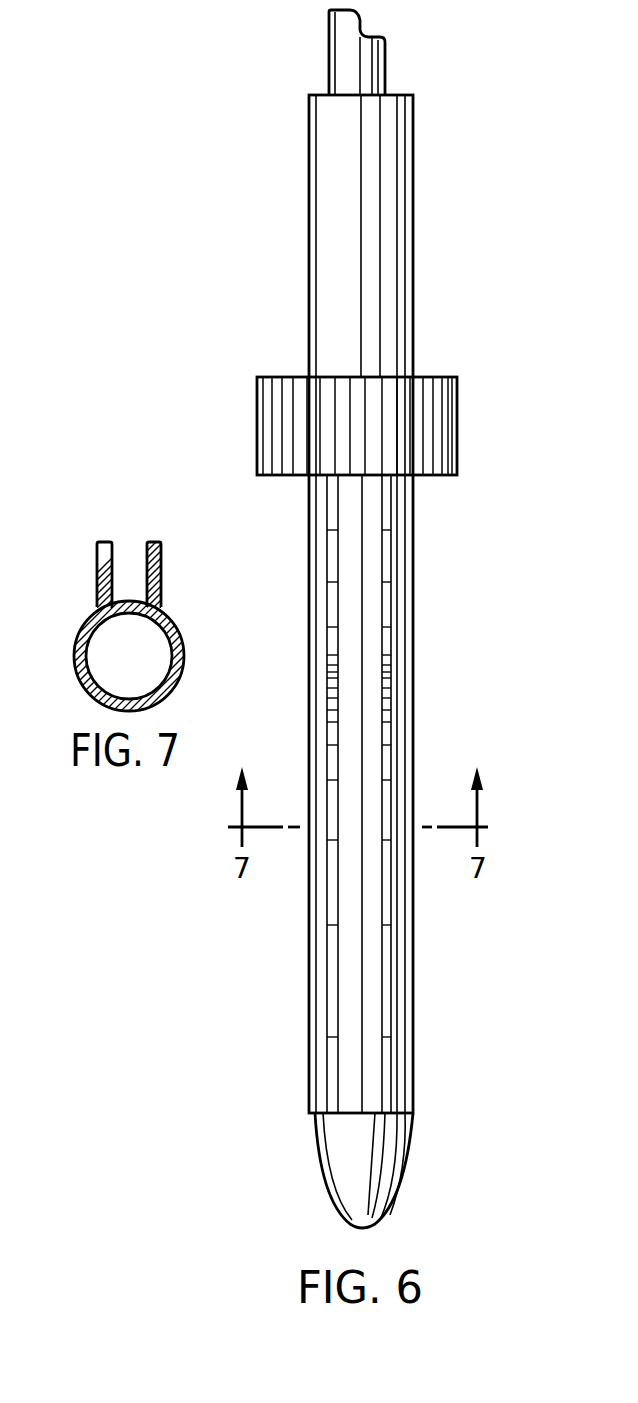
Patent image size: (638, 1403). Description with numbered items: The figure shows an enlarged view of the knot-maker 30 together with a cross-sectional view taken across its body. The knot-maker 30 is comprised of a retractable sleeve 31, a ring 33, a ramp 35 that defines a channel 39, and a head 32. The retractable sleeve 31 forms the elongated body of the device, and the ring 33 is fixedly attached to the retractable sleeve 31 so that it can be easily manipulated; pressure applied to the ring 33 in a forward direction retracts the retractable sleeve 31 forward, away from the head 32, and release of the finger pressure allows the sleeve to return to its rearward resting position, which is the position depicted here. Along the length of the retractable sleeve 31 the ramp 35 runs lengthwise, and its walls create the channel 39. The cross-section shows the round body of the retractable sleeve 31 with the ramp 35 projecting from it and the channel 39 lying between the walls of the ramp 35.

In FIG. 6, the knot-maker 30 is at (410, 619).
In FIG. 6, the retractable sleeve 31 is at (415, 273).
In FIG. 7, the retractable sleeve 31 is at (183, 657).
In FIG. 6, the head 32 is at (385, 1185).
In FIG. 6, the ring 33 is at (457, 430).
In FIG. 6, the ramp 35 is at (388, 760).
In FIG. 7, the ramp 35 is at (97, 560).
In FIG. 6, the channel 39 is at (368, 605).
In FIG. 7, the channel 39 is at (137, 568).